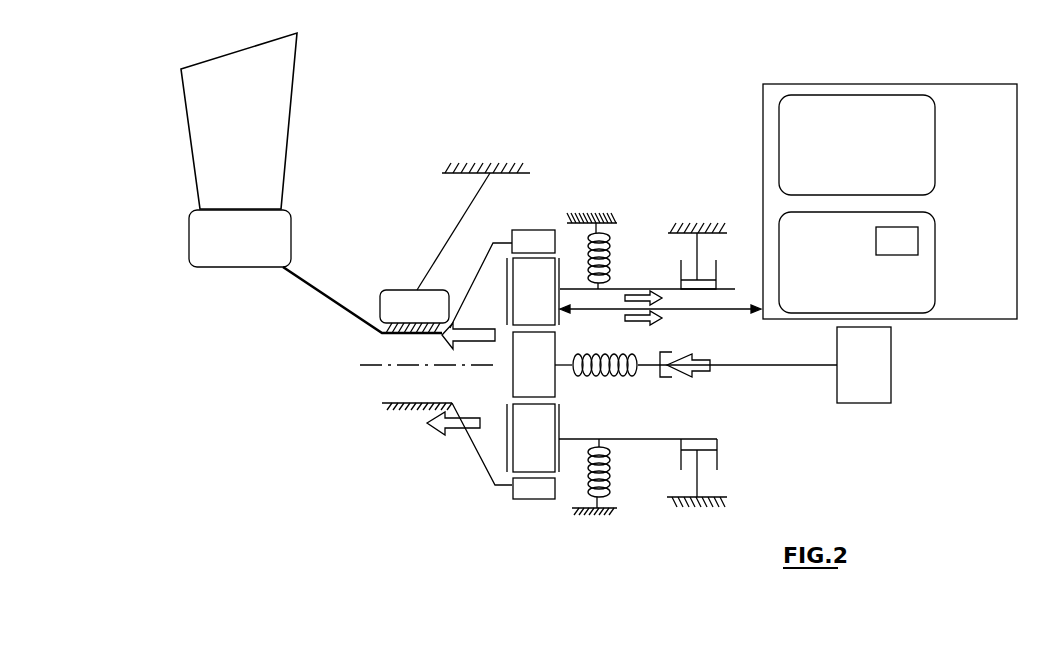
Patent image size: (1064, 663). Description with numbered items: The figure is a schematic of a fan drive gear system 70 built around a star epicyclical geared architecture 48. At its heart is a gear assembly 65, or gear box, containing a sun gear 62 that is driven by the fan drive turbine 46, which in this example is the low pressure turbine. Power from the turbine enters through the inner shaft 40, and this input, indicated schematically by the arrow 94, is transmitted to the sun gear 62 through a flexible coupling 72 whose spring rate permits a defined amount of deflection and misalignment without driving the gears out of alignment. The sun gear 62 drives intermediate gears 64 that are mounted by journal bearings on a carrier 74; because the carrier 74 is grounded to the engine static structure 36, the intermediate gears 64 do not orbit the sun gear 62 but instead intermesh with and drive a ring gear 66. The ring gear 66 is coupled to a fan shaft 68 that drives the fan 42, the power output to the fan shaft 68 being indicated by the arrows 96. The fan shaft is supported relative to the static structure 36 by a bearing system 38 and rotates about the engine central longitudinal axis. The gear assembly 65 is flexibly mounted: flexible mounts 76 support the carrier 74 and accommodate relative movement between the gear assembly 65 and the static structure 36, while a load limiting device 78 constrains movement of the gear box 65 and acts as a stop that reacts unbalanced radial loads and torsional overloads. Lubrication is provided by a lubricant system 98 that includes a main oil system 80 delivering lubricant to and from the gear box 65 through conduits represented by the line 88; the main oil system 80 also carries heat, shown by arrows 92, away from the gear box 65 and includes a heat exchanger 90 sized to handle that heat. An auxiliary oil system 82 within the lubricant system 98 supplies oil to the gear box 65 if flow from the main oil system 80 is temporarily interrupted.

The engine static structure 36 is at (520, 165).
The bearing system 38 is at (393, 290).
The inner shaft 40 is at (727, 366).
The fan 42 is at (250, 124).
The fan drive turbine 46 is at (866, 396).
The geared architecture 48 is at (386, 494).
The sun gear 62 is at (553, 396).
The intermediate gears 64 is at (545, 318).
The gear assembly 65 is at (504, 502).
The ring gear 66 is at (526, 230).
The fan shaft 68 is at (483, 466).
The fan drive gear system 70 is at (870, 70).
The flexible coupling 72 is at (610, 355).
The carrier 74 is at (578, 250).
The flexible mounts 76 is at (612, 477).
The load limiting device 78 is at (699, 250).
The main oil system 80 is at (930, 290).
The auxiliary oil system 82 is at (930, 172).
The line 88 is at (709, 311).
The heat exchanger 90 is at (908, 241).
The heat arrows 92 is at (636, 295).
The power input arrow 94 is at (700, 358).
The power output arrows 96 is at (479, 329).
The lubricant system 98 is at (1002, 133).